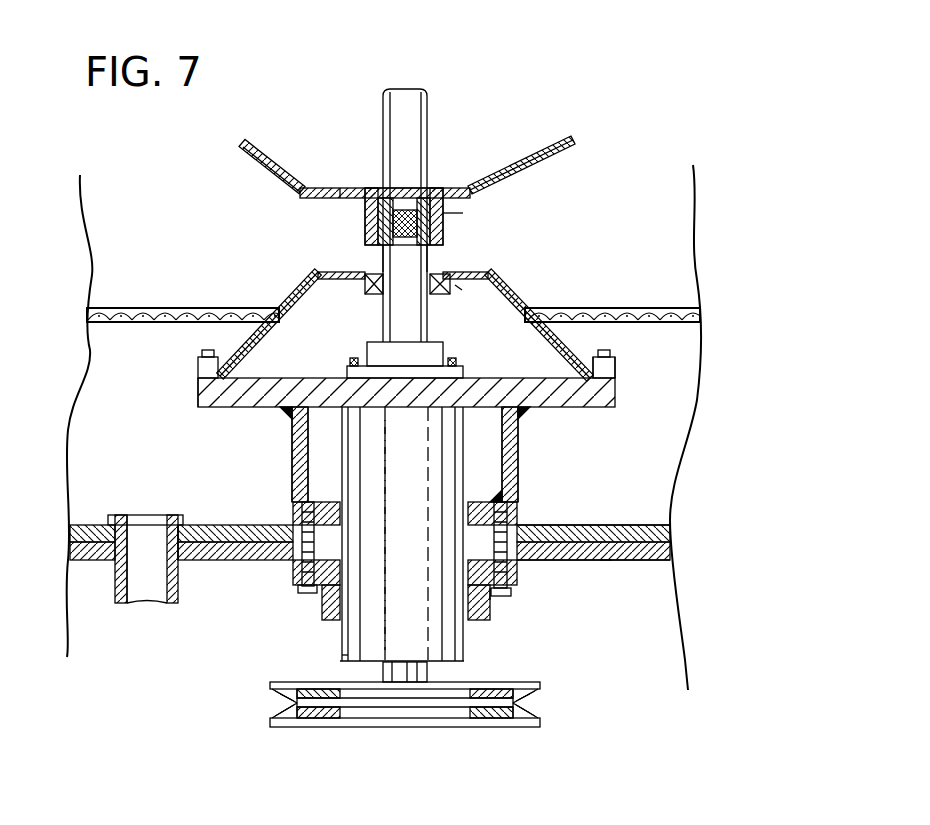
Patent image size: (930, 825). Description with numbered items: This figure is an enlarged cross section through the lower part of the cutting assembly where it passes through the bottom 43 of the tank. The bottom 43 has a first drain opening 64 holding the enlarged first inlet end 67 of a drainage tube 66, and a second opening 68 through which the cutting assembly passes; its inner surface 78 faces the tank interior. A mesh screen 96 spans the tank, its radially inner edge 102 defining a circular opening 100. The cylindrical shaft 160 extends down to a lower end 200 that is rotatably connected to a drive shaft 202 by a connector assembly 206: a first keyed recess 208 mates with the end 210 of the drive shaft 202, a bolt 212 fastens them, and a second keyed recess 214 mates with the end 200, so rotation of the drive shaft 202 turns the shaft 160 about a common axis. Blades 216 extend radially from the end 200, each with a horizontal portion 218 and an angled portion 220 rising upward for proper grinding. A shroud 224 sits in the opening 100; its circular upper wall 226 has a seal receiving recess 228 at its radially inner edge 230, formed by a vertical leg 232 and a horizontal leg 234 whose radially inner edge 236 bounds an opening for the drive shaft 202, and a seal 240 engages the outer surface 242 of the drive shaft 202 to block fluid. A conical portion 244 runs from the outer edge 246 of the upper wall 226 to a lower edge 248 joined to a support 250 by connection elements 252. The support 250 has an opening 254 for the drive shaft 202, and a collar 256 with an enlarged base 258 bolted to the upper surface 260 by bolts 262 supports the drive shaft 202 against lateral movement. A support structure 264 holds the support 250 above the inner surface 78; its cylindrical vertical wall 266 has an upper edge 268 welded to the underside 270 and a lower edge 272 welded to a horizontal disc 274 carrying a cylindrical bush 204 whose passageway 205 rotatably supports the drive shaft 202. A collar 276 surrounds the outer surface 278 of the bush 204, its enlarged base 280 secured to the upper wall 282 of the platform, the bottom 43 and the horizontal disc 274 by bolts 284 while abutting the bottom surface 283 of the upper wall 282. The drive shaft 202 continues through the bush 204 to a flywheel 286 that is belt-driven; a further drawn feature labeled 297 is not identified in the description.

The bottom 43 is at (633, 552).
The first drain opening 64 is at (113, 515).
The drainage tube 66 is at (118, 600).
The first inlet end 67 is at (175, 515).
The second opening 68 is at (300, 524).
The inner surface 78 is at (210, 532).
The mesh screen 96 is at (107, 307).
The circular opening 100 is at (275, 300).
The radially inner edge 102 is at (553, 330).
The shaft 160 is at (418, 113).
The lower end 200 is at (388, 176).
The drive shaft 202 is at (445, 250).
The cylindrical bush 204 is at (338, 452).
The passageway 205 is at (400, 620).
The connector assembly 206 is at (320, 180).
The first keyed recess 208 is at (362, 210).
The end 210 is at (463, 213).
The bolt 212 is at (423, 187).
The second keyed recess 214 is at (343, 190).
The blades 216 is at (250, 165).
The horizontal portion 218 is at (470, 188).
The angled portion 220 is at (556, 160).
The shroud 224 is at (522, 307).
The upper wall 226 is at (492, 272).
The seal receiving recess 228 is at (458, 289).
The radially inner edge 230 is at (305, 290).
The vertical leg 232 is at (365, 294).
The horizontal leg 234 is at (443, 294).
The radially inner edge 236 is at (360, 285).
The seal 240 is at (445, 267).
The outer surface 242 is at (387, 250).
The conical portion 244 is at (247, 320).
The outer edge 246 is at (487, 279).
The lower edge 248 is at (198, 366).
The support 250 is at (198, 392).
The connection elements 252 is at (202, 360).
The opening 254 is at (502, 452).
The collar 256 is at (454, 349).
The enlarged base 258 is at (347, 372).
The upper surface 260 is at (597, 410).
The bolts 262 is at (350, 365).
The support structure 264 is at (290, 472).
The cylindrical vertical wall 266 is at (517, 470).
The upper edge 268 is at (377, 410).
The underside 270 is at (240, 410).
The lower edge 272 is at (293, 500).
The horizontal disc 274 is at (517, 524).
The collar 276 is at (505, 493).
The outer surface 278 is at (390, 594).
The enlarged base 280 is at (300, 574).
The upper wall 282 is at (543, 555).
The bottom surface 283 is at (605, 562).
The bolts 284 is at (300, 575).
The flywheel 286 is at (453, 723).
The bolt end 297 is at (491, 598).